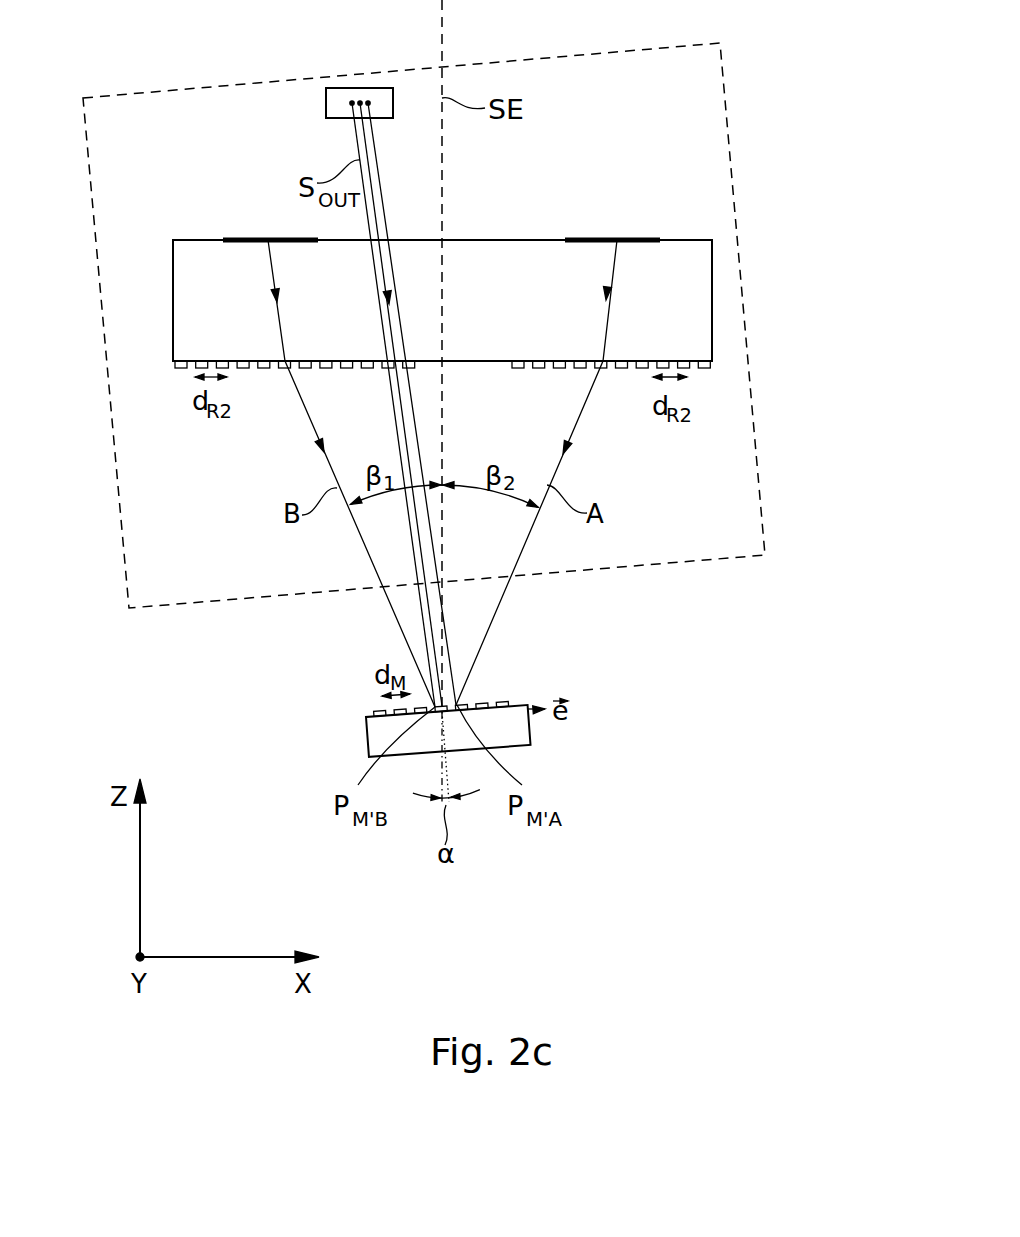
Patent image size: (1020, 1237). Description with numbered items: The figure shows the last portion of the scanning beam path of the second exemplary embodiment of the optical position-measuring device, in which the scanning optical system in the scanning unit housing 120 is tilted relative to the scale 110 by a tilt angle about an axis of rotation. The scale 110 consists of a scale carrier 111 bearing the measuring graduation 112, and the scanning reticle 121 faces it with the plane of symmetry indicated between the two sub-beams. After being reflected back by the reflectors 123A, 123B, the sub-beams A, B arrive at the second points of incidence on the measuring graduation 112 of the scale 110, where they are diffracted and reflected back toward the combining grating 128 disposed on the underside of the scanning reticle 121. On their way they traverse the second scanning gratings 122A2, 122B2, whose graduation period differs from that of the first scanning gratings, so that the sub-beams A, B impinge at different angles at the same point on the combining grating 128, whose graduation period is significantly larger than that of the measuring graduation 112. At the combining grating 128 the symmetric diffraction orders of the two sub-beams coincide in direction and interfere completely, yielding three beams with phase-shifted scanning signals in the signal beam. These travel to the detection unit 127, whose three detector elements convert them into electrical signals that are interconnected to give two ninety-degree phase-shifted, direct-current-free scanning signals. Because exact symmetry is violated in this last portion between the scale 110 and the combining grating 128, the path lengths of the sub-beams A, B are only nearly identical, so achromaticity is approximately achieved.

The scale 110 is at (470, 701).
The scale carrier 111 is at (367, 745).
The measuring graduation 112 is at (502, 698).
The scanning unit housing 120 is at (708, 77).
The scanning reticle 121 is at (507, 250).
The second scanning grating 122B2 is at (260, 372).
The second scanning grating 122A2 is at (634, 370).
The reflector 123B is at (270, 240).
The reflector 123A is at (617, 240).
The detection unit 127 is at (333, 103).
The combining grating 128 is at (385, 372).